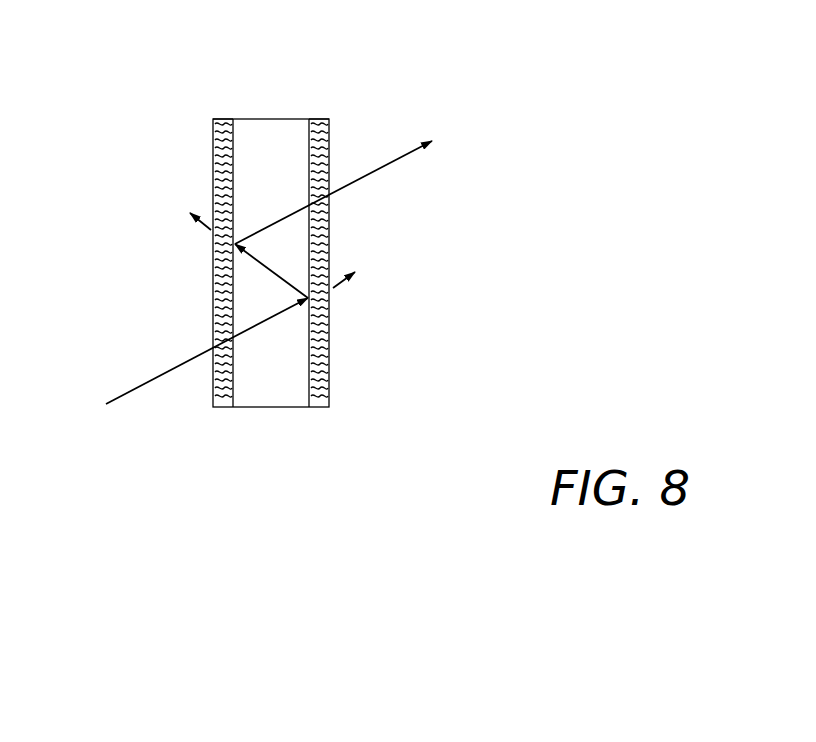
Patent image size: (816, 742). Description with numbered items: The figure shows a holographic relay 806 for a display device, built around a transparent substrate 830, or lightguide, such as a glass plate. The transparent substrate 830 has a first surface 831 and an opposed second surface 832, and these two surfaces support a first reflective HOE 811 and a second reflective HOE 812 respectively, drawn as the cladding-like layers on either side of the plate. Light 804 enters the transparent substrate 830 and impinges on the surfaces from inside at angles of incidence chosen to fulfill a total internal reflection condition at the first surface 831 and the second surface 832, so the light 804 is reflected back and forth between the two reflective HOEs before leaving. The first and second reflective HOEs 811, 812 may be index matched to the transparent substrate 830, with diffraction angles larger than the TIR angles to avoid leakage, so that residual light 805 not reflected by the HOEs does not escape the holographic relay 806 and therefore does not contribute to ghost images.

The holographic relay 806 is at (388, 88).
The transparent substrate 830 is at (270, 408).
The second reflective HOE 812 is at (213, 284).
The first reflective HOE 811 is at (331, 397).
The second surface 832 is at (213, 143).
The first surface 831 is at (312, 340).
The light 804 is at (132, 385).
The residual light 805 is at (187, 214).